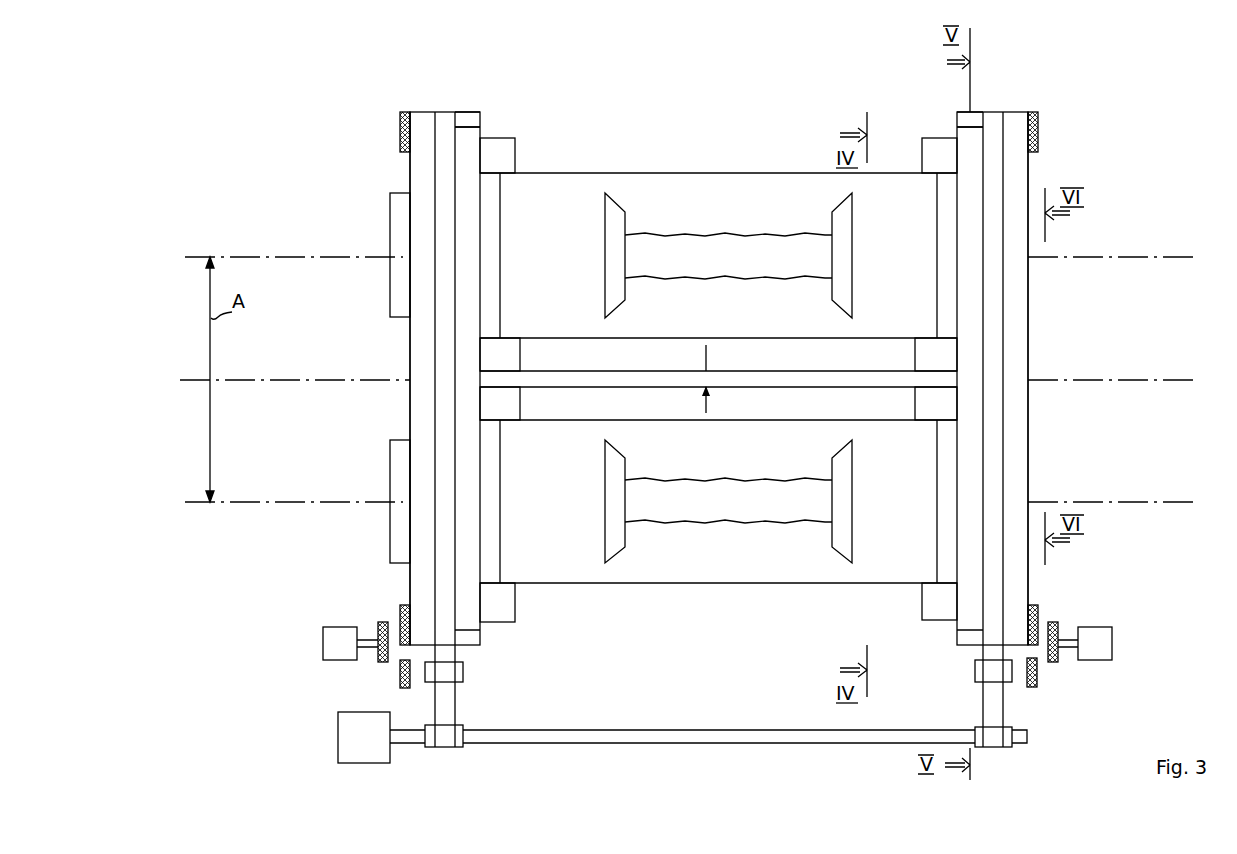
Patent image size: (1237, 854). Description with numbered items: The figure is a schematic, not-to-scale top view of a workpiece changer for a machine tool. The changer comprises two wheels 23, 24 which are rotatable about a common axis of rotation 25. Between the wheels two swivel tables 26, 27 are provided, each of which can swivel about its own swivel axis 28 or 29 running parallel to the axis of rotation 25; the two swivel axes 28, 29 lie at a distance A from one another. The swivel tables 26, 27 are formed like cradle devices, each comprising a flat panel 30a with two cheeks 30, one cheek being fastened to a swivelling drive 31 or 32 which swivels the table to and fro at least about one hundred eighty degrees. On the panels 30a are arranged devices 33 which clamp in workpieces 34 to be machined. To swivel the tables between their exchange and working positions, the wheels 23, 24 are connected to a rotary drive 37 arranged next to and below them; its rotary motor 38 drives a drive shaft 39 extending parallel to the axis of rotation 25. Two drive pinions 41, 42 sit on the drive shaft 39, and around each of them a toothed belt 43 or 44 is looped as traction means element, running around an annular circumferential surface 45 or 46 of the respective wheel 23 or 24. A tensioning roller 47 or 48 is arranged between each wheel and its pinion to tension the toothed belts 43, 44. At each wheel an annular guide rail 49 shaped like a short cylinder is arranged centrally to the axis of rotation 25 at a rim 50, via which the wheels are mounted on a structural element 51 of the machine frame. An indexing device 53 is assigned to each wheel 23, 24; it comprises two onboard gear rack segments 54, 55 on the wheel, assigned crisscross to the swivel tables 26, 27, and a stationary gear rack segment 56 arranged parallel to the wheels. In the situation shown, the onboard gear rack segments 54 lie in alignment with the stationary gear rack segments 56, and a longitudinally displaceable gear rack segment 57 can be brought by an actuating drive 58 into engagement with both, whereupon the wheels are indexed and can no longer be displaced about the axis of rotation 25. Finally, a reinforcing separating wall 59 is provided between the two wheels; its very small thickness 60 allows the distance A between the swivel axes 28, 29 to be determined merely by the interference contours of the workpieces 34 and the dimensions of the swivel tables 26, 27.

The wheel 23 is at (450, 100).
The wheel 24 is at (985, 100).
The axis of rotation 25 is at (1112, 380).
The swivel table 26 is at (576, 570).
The swivel table 27 is at (537, 183).
The swivel axis 28 is at (1114, 502).
The swivel axis 29 is at (1112, 257).
The cheek 30 is at (490, 225).
The flat panel 30a is at (580, 267).
The swivelling drive 31 is at (400, 480).
The swivelling drive 32 is at (397, 290).
The device 33 is at (622, 232).
The workpiece 34 is at (738, 272).
The rotary drive 37 is at (625, 703).
The rotary motor 38 is at (350, 738).
The drive shaft 39 is at (740, 736).
The drive pinion 41 is at (445, 735).
The drive pinion 42 is at (995, 735).
The toothed belt 43 is at (443, 400).
The toothed belt 44 is at (1003, 432).
The annular circumferential surface 45 is at (428, 112).
The annular circumferential surface 46 is at (1006, 112).
The tensioning roller 47 is at (450, 673).
The tensioning roller 48 is at (985, 670).
The annular guide rail 49 is at (470, 120).
The rim 50 is at (482, 116).
The structural element 51 is at (498, 155).
The indexing device 53 is at (313, 575).
The onboard gear rack segment 54 is at (403, 605).
The onboard gear rack segment 55 is at (400, 140).
The stationary gear rack segment 56 is at (398, 675).
The longitudinally displaceable gear rack segment 57 is at (378, 625).
The actuating drive 58 is at (335, 642).
The reinforcing separating wall 59 is at (636, 385).
The thickness 60 is at (712, 338).